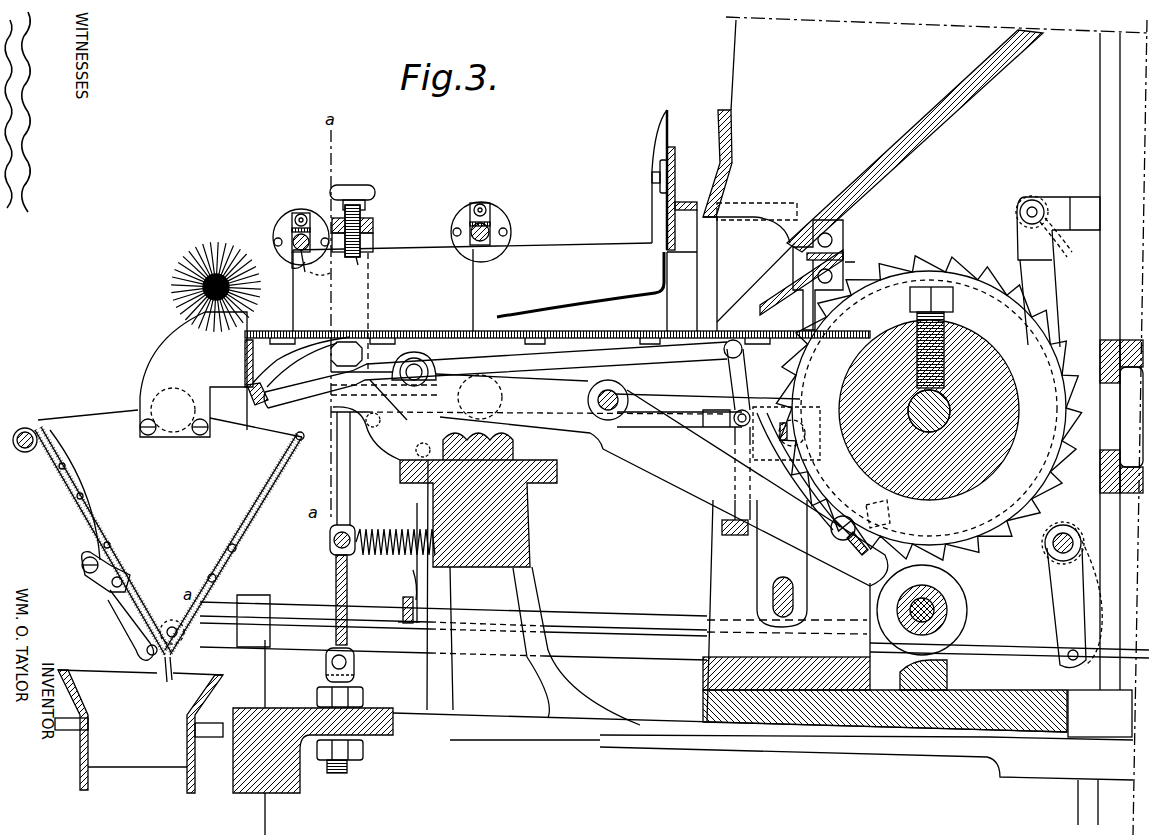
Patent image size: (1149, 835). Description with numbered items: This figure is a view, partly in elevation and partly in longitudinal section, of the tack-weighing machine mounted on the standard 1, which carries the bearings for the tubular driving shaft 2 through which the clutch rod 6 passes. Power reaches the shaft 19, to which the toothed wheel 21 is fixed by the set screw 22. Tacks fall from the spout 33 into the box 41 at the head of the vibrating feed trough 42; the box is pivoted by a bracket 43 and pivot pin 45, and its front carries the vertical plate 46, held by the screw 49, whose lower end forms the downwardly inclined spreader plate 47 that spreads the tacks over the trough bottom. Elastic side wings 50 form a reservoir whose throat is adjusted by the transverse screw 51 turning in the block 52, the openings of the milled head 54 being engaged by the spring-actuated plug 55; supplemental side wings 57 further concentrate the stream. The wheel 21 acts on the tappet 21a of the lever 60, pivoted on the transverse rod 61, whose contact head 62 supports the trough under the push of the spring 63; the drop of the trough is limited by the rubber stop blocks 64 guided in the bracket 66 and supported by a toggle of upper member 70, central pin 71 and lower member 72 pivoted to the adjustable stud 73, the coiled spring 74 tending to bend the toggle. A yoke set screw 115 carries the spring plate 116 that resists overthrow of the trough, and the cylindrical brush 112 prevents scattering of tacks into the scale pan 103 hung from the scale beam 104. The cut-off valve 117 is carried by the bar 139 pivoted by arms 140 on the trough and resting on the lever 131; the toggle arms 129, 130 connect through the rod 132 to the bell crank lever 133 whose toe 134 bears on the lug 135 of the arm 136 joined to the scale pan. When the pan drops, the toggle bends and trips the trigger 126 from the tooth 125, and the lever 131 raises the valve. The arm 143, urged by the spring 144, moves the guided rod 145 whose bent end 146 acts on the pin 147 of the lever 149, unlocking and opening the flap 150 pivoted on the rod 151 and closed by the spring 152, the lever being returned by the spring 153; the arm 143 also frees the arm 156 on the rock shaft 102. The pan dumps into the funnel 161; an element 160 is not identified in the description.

The standard 1 is at (650, 737).
The driving shaft 2 is at (942, 600).
The rod 6 is at (950, 614).
The shaft 19 is at (940, 414).
The toothed wheel 21 is at (938, 266).
The tappet 21a is at (897, 505).
The set screw 22 is at (950, 304).
The spout 33 is at (873, 141).
The box 41 is at (750, 262).
The feed trough 42 is at (557, 329).
The bracket 43 is at (813, 305).
The pivot pin 45 is at (847, 263).
The vertical plate 46 is at (653, 138).
The spreader plate 47 is at (580, 284).
The screw 49 is at (652, 178).
The side wings 50 is at (589, 195).
The transverse screw 51 is at (518, 216).
The block 52 is at (291, 260).
The milled head 54 is at (279, 226).
The spring-actuated plug 55 is at (301, 213).
The side wings 57 is at (472, 287).
The lever 60 is at (745, 488).
The transverse rod 61 is at (620, 390).
The contact head 62 is at (331, 366).
The spring 63 is at (360, 389).
The stop blocks 64 is at (365, 345).
The bracket 66 is at (530, 450).
The upper toggle member 70 is at (350, 502).
The central pin 71 is at (330, 541).
The lower toggle member 72 is at (335, 592).
The stud 73 is at (350, 670).
The coiled spring 74 is at (398, 556).
The rock shaft 102 is at (1054, 546).
The scale pan 103 is at (170, 462).
The scale beam 104 is at (670, 402).
The cylindrical brush 112 is at (216, 277).
The set screw 115 is at (375, 240).
The spring plate 116 is at (362, 268).
The cut-off valve 117 is at (245, 358).
The tooth 125 is at (878, 500).
The trigger 126 is at (800, 497).
The toggle arm 129 is at (740, 379).
The toggle arm 130 is at (738, 446).
The lever 131 is at (495, 375).
The rod 132 is at (690, 425).
The bell crank lever 133 is at (421, 513).
The toe 134 is at (404, 605).
The lug 135 is at (391, 626).
The arm 136 is at (453, 641).
The bar 139 is at (253, 400).
The arms 140 is at (278, 370).
The arm 143 is at (1058, 624).
The spring 144 is at (1057, 235).
The guided rod 145 is at (227, 600).
The bent front end 146 is at (173, 662).
The pin 147 is at (147, 650).
The lever 149 is at (128, 610).
The movable flap 150 is at (135, 592).
The rod 151 is at (19, 431).
The spring 152 is at (52, 457).
The spring 153 is at (97, 540).
The arm 156 is at (1068, 578).
The pivot 160 is at (172, 626).
The funnel 161 is at (139, 731).